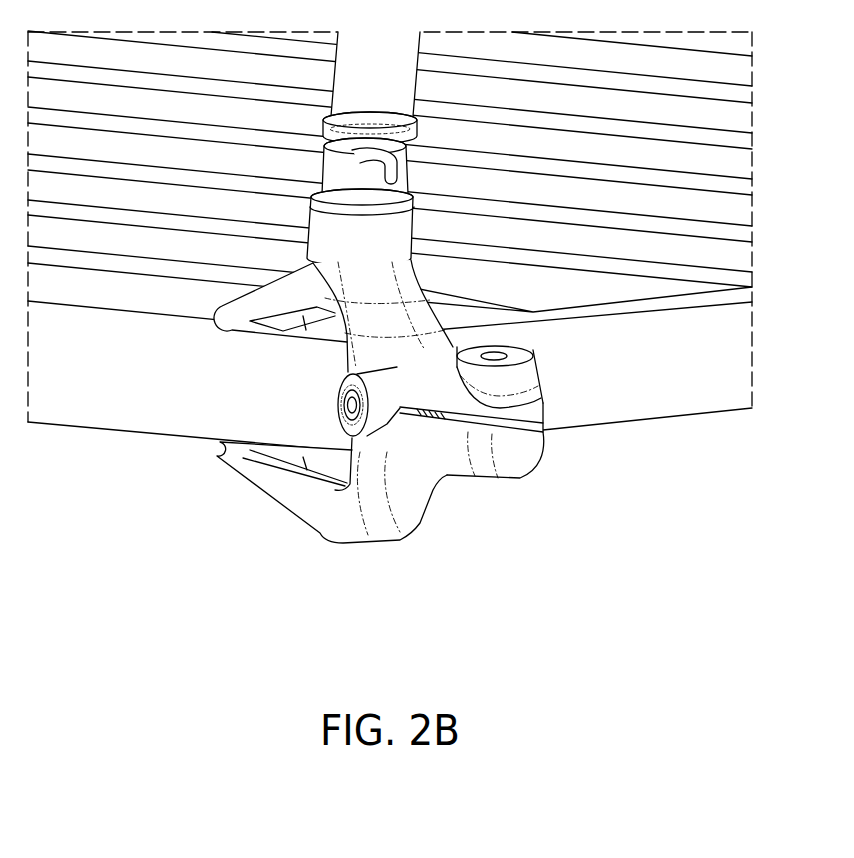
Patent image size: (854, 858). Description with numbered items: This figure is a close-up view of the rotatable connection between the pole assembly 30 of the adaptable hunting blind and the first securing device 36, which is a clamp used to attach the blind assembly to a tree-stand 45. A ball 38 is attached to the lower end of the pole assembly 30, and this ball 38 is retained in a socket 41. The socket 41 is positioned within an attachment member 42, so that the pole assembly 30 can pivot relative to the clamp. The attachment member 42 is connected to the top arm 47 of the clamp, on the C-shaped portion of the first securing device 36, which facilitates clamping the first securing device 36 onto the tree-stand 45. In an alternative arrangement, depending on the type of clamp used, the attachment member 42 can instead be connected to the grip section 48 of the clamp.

The pole assembly 30 is at (398, 79).
The first securing device 36 is at (384, 412).
The ball 38 is at (410, 157).
The socket 41 is at (397, 173).
The attachment member 42 is at (323, 228).
The tree-stand 45 is at (643, 403).
The top arm 47 is at (248, 316).
The grip section 48 is at (512, 378).